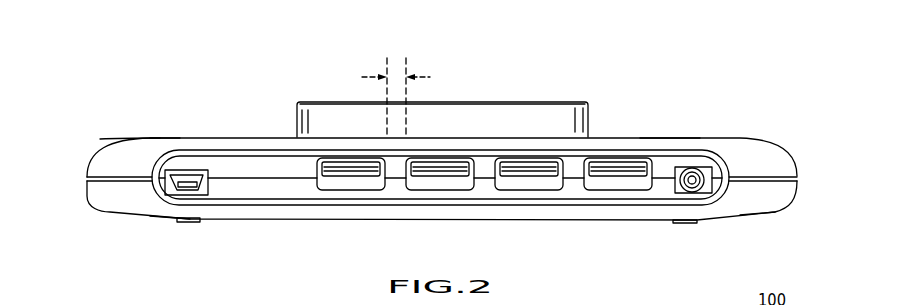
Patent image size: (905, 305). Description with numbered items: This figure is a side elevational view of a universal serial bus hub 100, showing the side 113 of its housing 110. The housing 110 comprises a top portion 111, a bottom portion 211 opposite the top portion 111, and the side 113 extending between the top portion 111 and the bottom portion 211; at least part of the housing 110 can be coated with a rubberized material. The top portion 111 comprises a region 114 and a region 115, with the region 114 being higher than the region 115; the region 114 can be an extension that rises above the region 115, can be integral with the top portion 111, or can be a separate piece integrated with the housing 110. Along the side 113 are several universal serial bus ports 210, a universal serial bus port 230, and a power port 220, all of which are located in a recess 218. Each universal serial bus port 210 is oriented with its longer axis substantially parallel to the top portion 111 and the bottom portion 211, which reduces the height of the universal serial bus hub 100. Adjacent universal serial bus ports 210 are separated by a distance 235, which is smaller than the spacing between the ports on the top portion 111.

The universal serial bus hub 100 is at (116, 81).
The housing 110 is at (165, 147).
The top portion 111 is at (103, 157).
The side 113 is at (758, 203).
The region 114 is at (560, 102).
The region 115 is at (653, 138).
The universal serial bus port 210 is at (335, 180).
The bottom portion 211 is at (170, 217).
The recess 218 is at (485, 195).
The power port 220 is at (707, 192).
The universal serial bus port 230 is at (203, 170).
The distance 235 is at (415, 97).